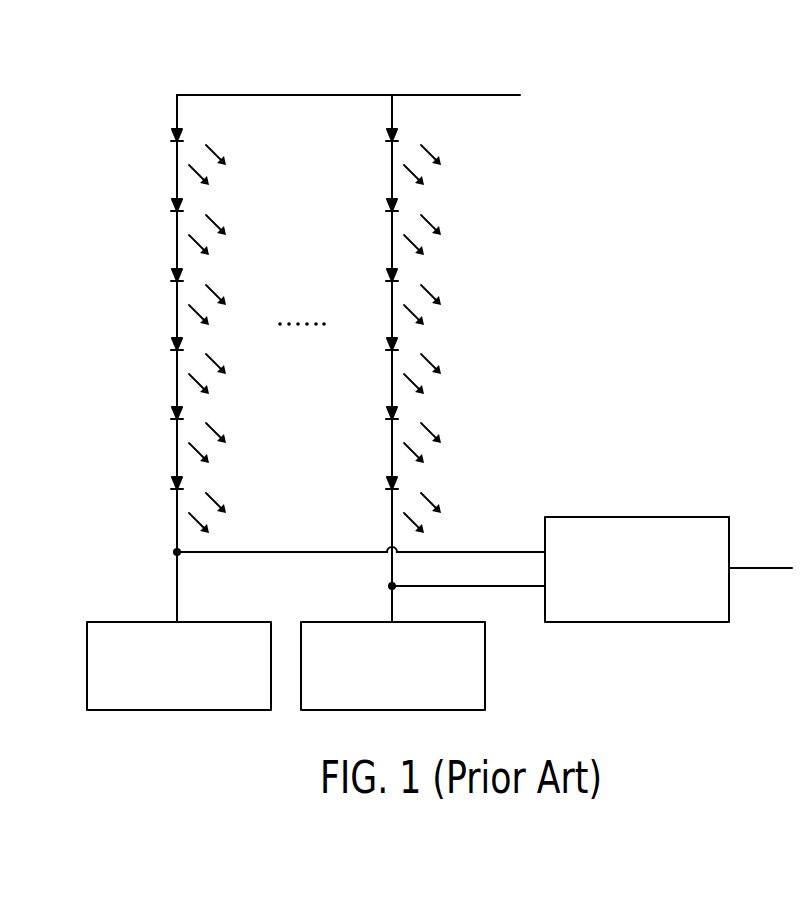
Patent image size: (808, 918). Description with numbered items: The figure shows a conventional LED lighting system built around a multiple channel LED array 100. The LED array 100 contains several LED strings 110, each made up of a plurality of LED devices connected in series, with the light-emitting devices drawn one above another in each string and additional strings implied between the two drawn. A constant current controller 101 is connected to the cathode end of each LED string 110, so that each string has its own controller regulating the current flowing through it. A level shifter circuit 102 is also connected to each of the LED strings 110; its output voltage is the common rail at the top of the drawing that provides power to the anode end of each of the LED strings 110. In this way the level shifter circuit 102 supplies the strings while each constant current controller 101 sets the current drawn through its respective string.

The LED array 100 is at (637, 79).
The constant current controller 101 is at (286, 652).
The level shifter circuit 102 is at (451, 555).
The LED string 110 is at (163, 228).